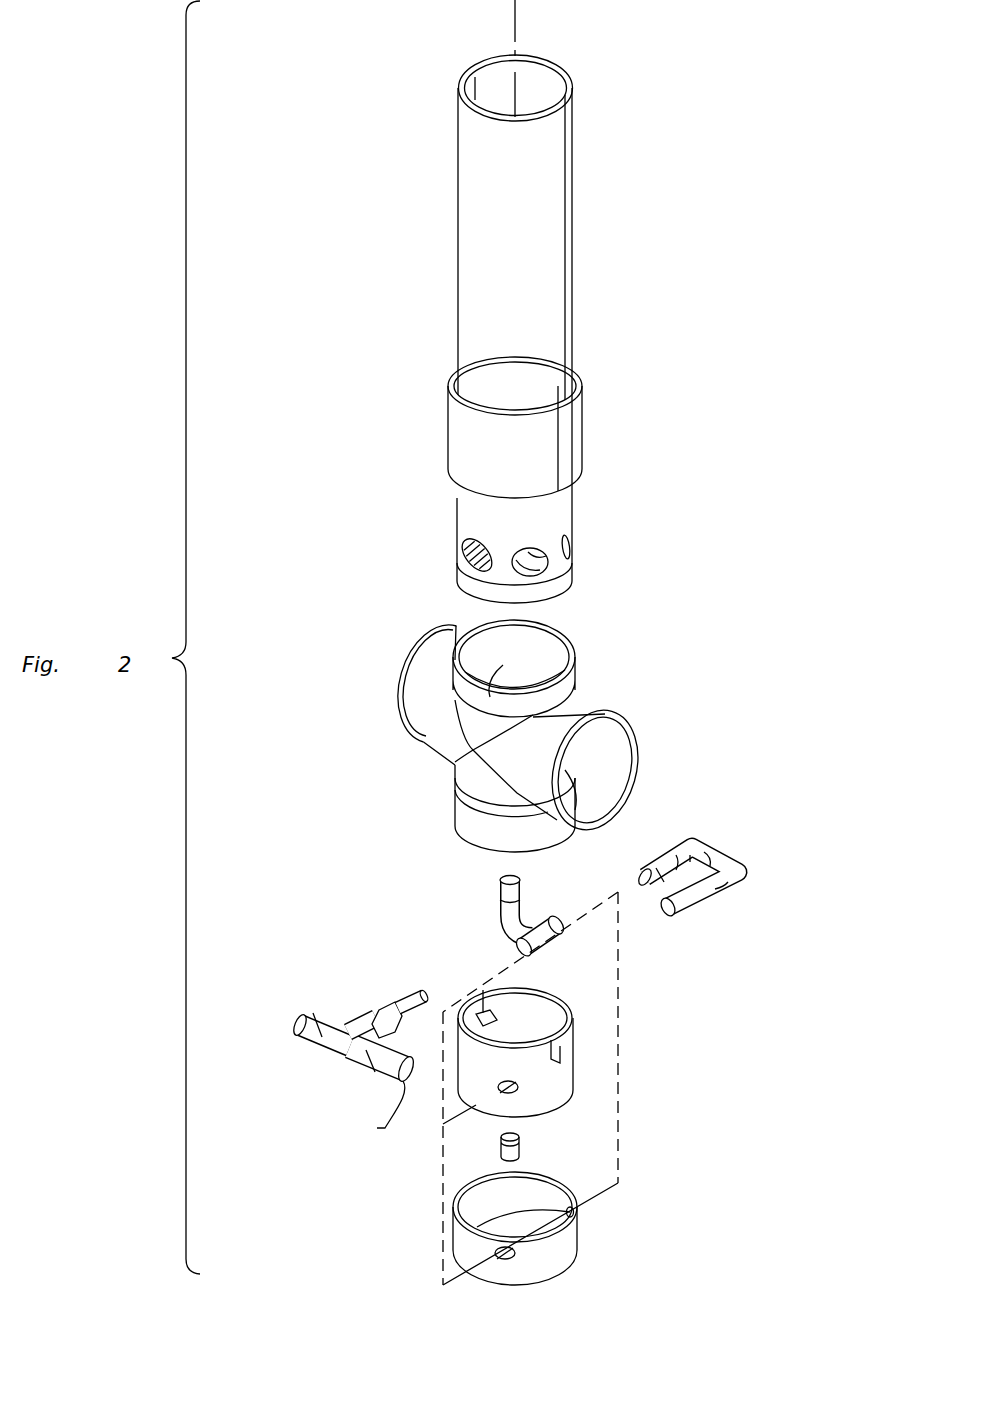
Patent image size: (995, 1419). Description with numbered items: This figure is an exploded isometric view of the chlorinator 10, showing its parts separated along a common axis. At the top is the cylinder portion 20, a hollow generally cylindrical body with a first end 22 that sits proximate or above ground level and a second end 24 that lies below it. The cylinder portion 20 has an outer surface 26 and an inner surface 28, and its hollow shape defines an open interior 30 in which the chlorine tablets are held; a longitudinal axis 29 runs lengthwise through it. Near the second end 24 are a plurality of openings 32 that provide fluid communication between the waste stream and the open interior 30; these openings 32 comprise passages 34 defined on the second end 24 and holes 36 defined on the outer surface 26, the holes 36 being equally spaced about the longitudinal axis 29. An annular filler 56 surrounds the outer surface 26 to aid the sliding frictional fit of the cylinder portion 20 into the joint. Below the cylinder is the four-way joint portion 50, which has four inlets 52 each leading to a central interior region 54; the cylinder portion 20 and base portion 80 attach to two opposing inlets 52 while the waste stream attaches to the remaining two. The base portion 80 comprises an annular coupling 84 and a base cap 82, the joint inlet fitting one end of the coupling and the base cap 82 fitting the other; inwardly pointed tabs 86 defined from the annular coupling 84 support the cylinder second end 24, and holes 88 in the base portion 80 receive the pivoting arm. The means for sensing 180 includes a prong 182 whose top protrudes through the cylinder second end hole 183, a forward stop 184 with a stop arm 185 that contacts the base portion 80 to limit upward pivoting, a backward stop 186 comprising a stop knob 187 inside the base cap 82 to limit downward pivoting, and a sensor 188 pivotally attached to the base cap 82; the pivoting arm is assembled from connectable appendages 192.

The chlorinator 10 is at (573, 480).
The cylinder portion 20 is at (558, 203).
The first end 22 is at (560, 62).
The second end 24 is at (574, 578).
The outer surface 26 is at (458, 238).
The inner surface 28 is at (490, 78).
The longitudinal axis 29 is at (512, 15).
The open interior 30 is at (555, 92).
The openings 32 is at (551, 505).
The passages 34 is at (465, 569).
The holes 36 is at (465, 551).
The 4-way joint portion 50 is at (540, 734).
The inlets 52 is at (578, 663).
The central interior region 54 is at (522, 672).
The annular filler 56 is at (449, 421).
The base portion 80 is at (552, 1088).
The base cap 82 is at (578, 1233).
The annular coupling 84 is at (527, 1060).
The base portion tabs 86 is at (496, 1016).
The holes 88 is at (517, 1088).
The means for sensing 180 is at (552, 969).
The prong 182 is at (500, 912).
The cylinder portion second end hole 183 is at (530, 556).
The forward stop 184 is at (724, 898).
The stop arm 185 is at (702, 893).
The backward stop 186 is at (521, 1148).
The stop knob 187 is at (504, 1150).
The sensor 188 is at (330, 1056).
The connectable appendages 192 is at (540, 946).